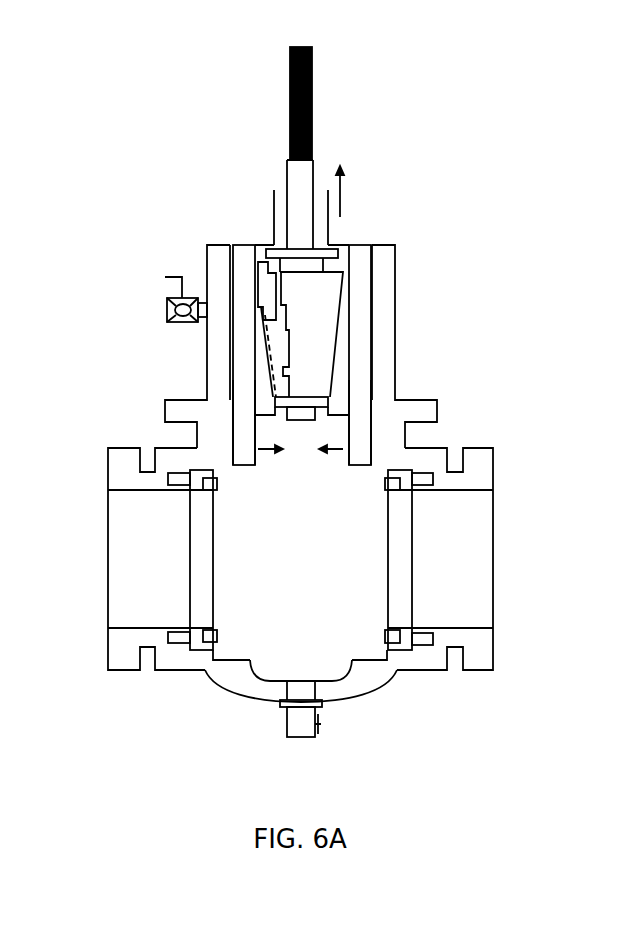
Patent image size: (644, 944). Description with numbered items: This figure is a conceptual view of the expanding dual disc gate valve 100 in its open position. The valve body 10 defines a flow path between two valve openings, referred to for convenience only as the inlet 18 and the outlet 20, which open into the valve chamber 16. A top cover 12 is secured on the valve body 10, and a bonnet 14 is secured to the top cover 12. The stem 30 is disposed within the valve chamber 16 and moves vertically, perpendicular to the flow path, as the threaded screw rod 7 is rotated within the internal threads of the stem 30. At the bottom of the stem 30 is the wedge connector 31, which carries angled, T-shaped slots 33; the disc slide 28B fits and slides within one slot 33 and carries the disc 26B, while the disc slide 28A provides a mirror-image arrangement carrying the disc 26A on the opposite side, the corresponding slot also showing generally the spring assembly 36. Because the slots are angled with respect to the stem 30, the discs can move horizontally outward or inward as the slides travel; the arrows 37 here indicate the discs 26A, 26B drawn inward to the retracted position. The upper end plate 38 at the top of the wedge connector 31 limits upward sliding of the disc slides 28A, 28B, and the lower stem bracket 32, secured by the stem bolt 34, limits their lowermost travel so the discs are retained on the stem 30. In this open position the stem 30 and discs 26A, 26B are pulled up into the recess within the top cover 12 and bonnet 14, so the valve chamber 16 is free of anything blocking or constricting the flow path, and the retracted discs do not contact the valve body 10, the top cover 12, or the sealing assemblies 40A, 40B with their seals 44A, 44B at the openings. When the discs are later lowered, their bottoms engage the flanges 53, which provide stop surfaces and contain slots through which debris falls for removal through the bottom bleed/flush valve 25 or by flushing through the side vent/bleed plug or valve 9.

The expanding dual disc gate valve 100 is at (556, 162).
The threaded screw rod 7 is at (313, 110).
The vent/bleed plug or valve 9 is at (165, 303).
The valve body 10 is at (483, 458).
The top cover 12 is at (363, 265).
The bonnet 14 is at (275, 203).
The valve chamber 16 is at (340, 642).
The inlet 18 is at (135, 558).
The outlet 20 is at (467, 557).
The bottom bleed/flush valve 25 is at (300, 725).
The disc 26A is at (365, 262).
The disc 26B is at (240, 265).
The disc slide 28A is at (343, 387).
The disc slide 28B is at (260, 390).
The stem 30 is at (302, 180).
The wedge connector 31 is at (315, 335).
The lower stem bracket 32 is at (300, 398).
The slot 33 is at (272, 355).
The stem bolt 34 is at (302, 413).
The spring assembly 36 is at (258, 228).
The arrows 37 is at (265, 452).
The upper end plate 38 is at (318, 255).
The sealing assembly 40A is at (402, 647).
The sealing assembly 40B is at (198, 647).
The seal 44A is at (392, 635).
The sealing assembly 44B is at (212, 638).
The flanges 53 is at (230, 660).